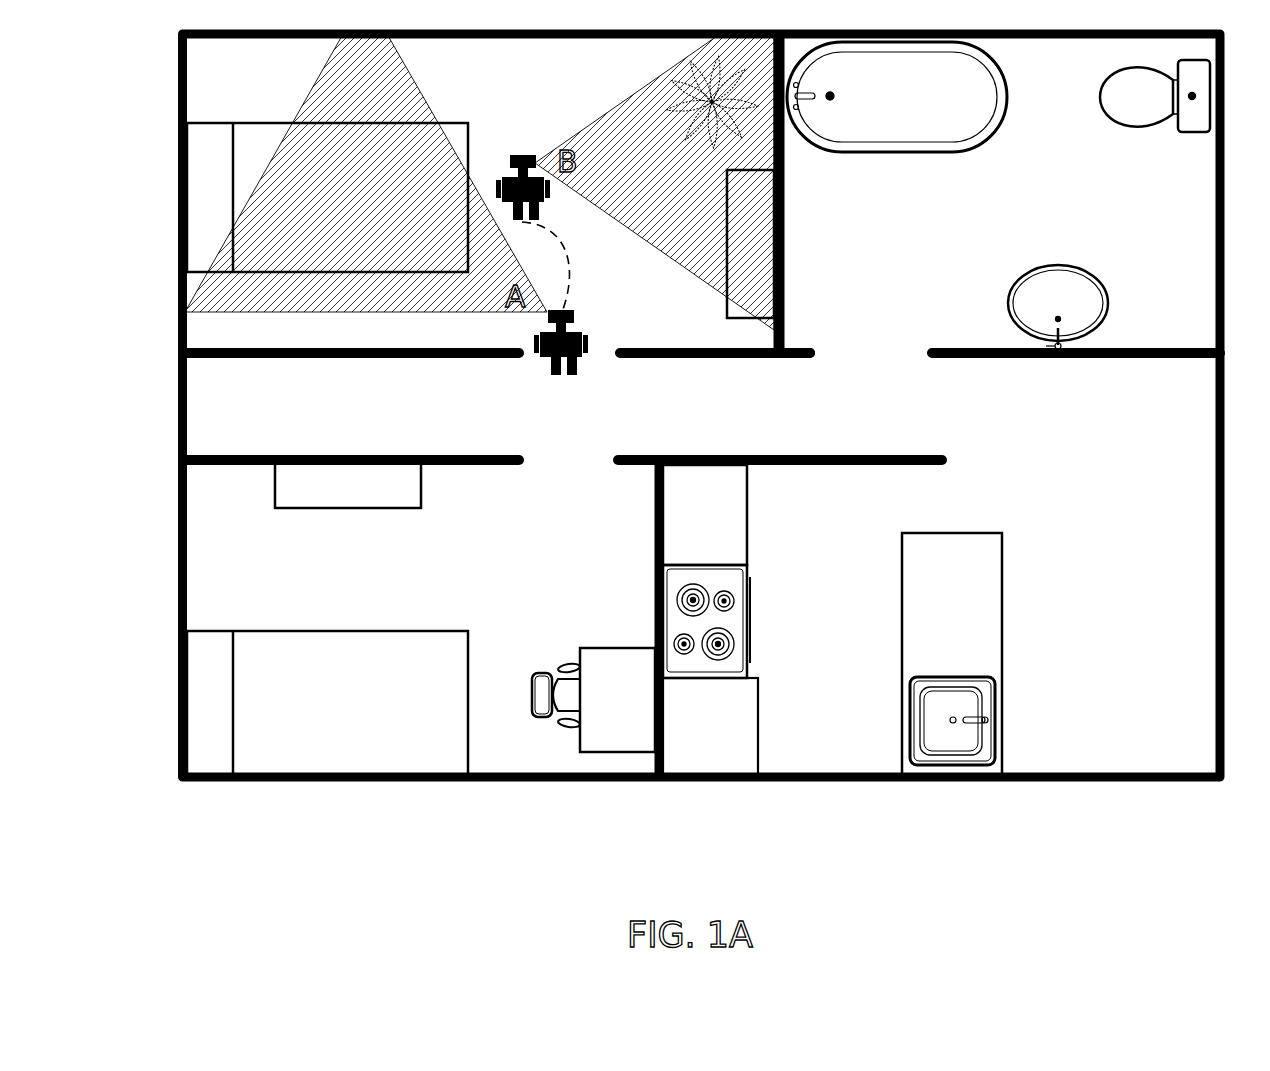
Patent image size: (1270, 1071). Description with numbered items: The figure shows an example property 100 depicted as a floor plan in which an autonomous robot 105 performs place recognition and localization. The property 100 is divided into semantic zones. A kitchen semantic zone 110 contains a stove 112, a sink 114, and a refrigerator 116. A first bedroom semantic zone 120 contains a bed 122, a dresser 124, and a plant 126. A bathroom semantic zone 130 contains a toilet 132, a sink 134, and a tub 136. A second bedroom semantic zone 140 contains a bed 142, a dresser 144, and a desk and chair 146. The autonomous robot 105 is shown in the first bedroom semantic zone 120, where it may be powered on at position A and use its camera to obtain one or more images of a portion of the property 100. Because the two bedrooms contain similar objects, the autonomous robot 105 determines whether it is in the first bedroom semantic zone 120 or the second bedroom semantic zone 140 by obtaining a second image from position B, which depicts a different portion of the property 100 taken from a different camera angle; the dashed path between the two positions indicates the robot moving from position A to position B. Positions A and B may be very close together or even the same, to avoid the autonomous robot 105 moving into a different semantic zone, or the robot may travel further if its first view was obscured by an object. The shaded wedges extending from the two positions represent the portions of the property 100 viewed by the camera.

The property 100 is at (186, 832).
The autonomous robot 105 is at (519, 153).
The kitchen semantic zone 110 is at (967, 494).
The stove 112 is at (727, 565).
The sink 114 is at (975, 677).
The refrigerator 116 is at (758, 700).
The first bedroom semantic zone 120 is at (510, 74).
The bed 122 is at (282, 123).
The dresser 124 is at (727, 290).
The plant 126 is at (668, 100).
The bathroom semantic zone 130 is at (1205, 338).
The toilet 132 is at (1100, 96).
The sink 134 is at (1027, 275).
The tub 136 is at (947, 141).
The second bedroom semantic zone 140 is at (434, 568).
The bed 142 is at (280, 631).
The dresser 144 is at (273, 476).
The desk and chair 146 is at (603, 648).